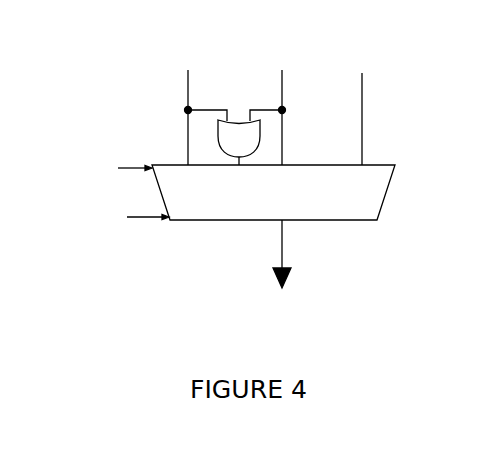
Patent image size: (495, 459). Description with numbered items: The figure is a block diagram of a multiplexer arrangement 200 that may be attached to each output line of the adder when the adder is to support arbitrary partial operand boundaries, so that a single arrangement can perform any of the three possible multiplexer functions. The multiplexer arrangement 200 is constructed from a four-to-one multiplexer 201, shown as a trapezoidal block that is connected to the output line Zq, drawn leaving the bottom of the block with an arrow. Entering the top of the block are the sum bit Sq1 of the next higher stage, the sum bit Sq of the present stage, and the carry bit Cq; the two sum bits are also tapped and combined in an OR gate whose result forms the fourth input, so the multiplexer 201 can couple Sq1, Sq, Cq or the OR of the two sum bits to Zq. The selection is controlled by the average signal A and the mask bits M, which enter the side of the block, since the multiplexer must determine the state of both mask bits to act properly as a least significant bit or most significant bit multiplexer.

The multiplexer arrangement 200 is at (89, 105).
The 4-to-1 multiplexer 201 is at (388, 181).
The sum bit Sq+1 Sq1 is at (189, 98).
The sum bit Sq is at (286, 98).
The carry bit Cq is at (362, 98).
The average signal A is at (123, 166).
The mask bits M is at (131, 213).
The output line Zq is at (284, 272).